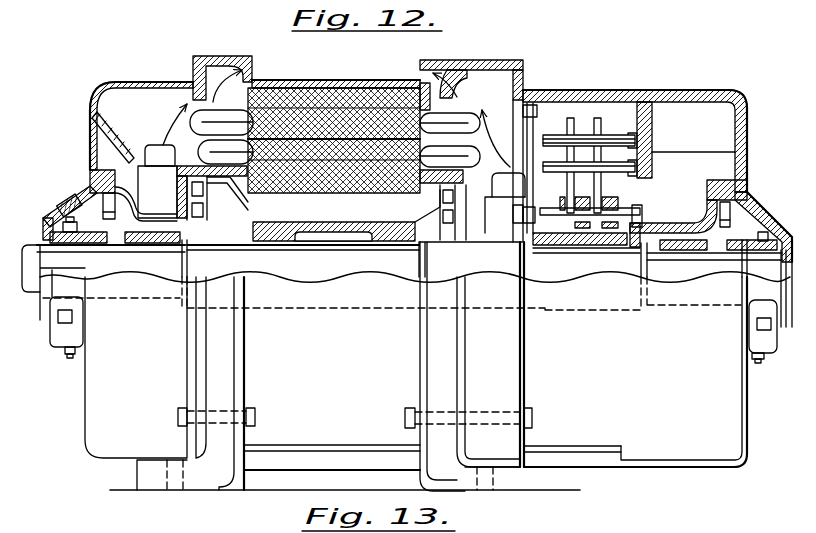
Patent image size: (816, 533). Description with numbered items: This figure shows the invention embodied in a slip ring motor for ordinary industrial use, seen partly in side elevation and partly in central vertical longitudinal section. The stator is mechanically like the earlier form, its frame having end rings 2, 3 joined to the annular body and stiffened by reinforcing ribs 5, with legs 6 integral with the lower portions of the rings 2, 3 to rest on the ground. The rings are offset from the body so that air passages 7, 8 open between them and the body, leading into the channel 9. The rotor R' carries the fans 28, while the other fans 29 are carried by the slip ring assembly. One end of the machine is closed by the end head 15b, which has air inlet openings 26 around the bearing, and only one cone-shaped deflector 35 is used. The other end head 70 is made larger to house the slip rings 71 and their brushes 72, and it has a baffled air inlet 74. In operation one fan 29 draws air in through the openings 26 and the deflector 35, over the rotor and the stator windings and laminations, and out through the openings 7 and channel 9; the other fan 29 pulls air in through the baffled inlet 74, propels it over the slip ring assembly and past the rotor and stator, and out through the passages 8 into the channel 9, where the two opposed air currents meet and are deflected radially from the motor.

The cone-shaped deflector 35 is at (110, 120).
The end head 15b is at (160, 82).
The air passage 7 is at (240, 66).
The channel 9 is at (350, 74).
The reinforcing rib 5 is at (387, 97).
The air passage 8 is at (456, 100).
The end head 70 is at (557, 90).
The brushes 72 is at (582, 125).
The slip rings 71 is at (627, 195).
The fans 28 is at (153, 157).
The air inlet openings 26 is at (107, 157).
The fans 29 is at (507, 186).
The rotor R is at (344, 190).
The end ring 2 is at (215, 377).
The end ring 3 is at (443, 365).
The legs 6 is at (157, 477).
The baffled air inlet 74 is at (594, 470).